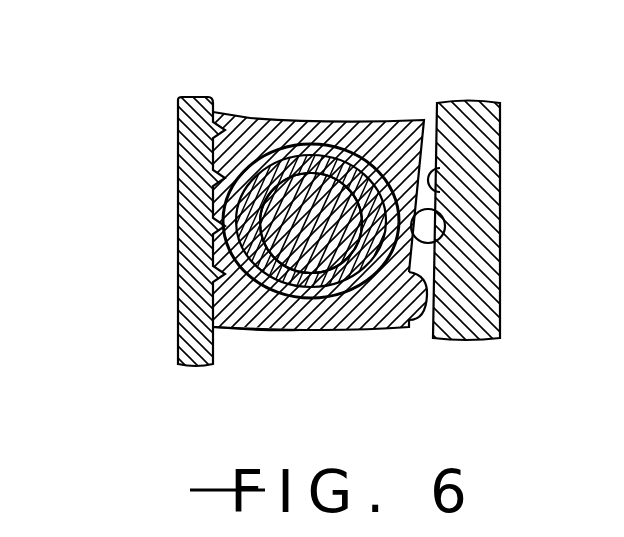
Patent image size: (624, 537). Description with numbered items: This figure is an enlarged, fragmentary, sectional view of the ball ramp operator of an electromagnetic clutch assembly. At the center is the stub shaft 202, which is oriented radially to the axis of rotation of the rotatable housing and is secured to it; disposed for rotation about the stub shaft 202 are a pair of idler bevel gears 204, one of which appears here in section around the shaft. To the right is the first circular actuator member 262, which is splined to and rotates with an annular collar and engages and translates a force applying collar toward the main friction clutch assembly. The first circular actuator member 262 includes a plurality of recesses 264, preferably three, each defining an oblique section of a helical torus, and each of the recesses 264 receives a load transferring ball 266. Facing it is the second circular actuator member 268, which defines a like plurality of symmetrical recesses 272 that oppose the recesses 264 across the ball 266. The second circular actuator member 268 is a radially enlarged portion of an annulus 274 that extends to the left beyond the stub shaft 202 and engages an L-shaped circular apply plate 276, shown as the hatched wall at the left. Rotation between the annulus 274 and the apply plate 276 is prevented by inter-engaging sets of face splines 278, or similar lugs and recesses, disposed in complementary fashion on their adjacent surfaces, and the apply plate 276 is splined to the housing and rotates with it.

The stub shaft 202 is at (312, 193).
The idler bevel gears 204 is at (350, 285).
The first circular actuator member 262 is at (478, 290).
The recesses 264 is at (445, 178).
The load transferring ball 266 is at (440, 222).
The second circular actuator member 268 is at (398, 120).
The symmetrical recesses 272 is at (410, 330).
The annulus 274 is at (235, 118).
The L-shaped circular apply plate 276 is at (178, 252).
The face splines 278 is at (240, 328).